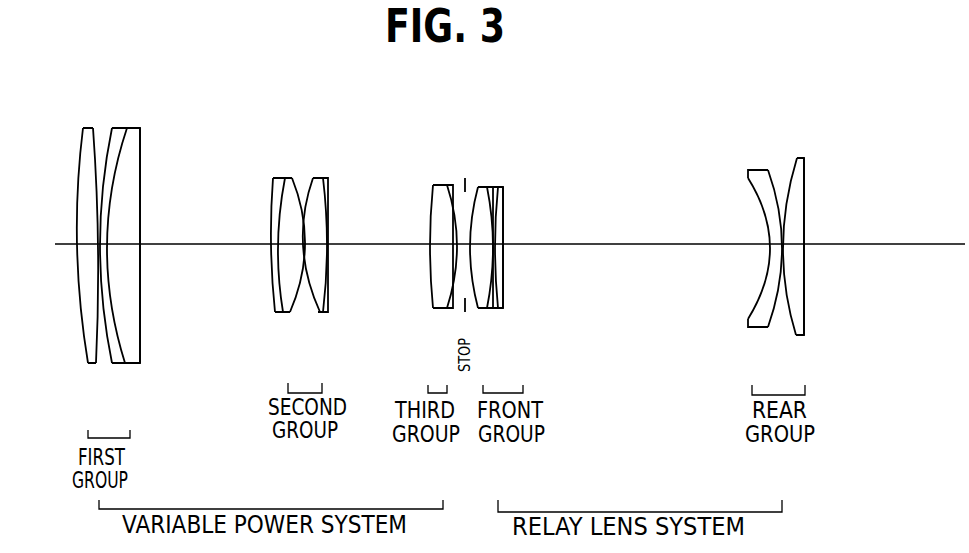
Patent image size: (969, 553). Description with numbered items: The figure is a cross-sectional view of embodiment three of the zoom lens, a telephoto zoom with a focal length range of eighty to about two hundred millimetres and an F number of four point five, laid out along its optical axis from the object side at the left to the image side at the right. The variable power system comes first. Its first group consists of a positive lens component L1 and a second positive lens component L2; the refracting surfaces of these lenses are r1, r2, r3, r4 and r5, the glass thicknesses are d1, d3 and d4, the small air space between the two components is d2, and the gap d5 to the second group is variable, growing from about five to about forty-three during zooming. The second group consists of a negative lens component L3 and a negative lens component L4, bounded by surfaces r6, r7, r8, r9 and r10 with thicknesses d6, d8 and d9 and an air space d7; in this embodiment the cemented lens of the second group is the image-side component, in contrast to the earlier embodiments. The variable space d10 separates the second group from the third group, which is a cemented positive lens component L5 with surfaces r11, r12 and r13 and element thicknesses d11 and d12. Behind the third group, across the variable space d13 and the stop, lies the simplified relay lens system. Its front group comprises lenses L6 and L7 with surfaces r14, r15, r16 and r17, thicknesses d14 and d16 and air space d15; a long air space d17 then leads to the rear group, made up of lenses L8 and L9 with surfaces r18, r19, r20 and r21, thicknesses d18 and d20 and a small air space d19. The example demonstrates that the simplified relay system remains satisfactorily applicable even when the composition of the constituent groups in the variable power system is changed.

The positive lens component L1 is at (90, 363).
The cemented positive lens component L2 is at (124, 363).
The cemented negative lens component L3 is at (282, 312).
The negative lens component L4 is at (320, 312).
The cemented positive lens component L5 is at (440, 308).
The front group lens component L6 is at (485, 308).
The front group lens component L7 is at (498, 308).
The rear group lens component L8 is at (752, 327).
The rear group lens component L9 is at (800, 335).
The refracting surface radius of curvature r1 is at (83, 128).
The refracting surface radius of curvature r2 is at (93, 128).
The refracting surface radius of curvature r3 is at (112, 128).
The refracting surface radius of curvature r4 is at (127, 128).
The refracting surface radius of curvature r5 is at (140, 128).
The refracting surface radius of curvature r6 is at (273, 178).
The refracting surface radius of curvature r7 is at (285, 178).
The refracting surface radius of curvature r8 is at (292, 178).
The refracting surface radius of curvature r9 is at (313, 178).
The refracting surface radius of curvature r10 is at (323, 178).
The refracting surface radius of curvature r11 is at (433, 185).
The refracting surface radius of curvature r12 is at (447, 185).
The refracting surface radius of curvature r13 is at (478, 187).
The refracting surface radius of curvature r14 is at (487, 187).
The refracting surface radius of curvature r15 is at (493, 187).
The refracting surface radius of curvature r16 is at (498, 187).
The refracting surface radius of curvature r17 is at (503, 187).
The refracting surface radius of curvature r18 is at (748, 170).
The refracting surface radius of curvature r19 is at (768, 170).
The refracting surface radius of curvature r20 is at (797, 158).
The refracting surface radius of curvature r21 is at (804, 158).
The axial lens thickness d1 is at (90, 234).
The axial air space d2 is at (100, 222).
The axial lens thickness d3 is at (105, 222).
The axial lens thickness d4 is at (122, 234).
The variable axial air space d5 is at (221, 249).
The axial lens thickness d6 is at (272, 226).
The axial air space d7 is at (292, 238).
The axial lens thickness d8 is at (308, 238).
The axial lens thickness d9 is at (321, 250).
The variable axial air space d10 is at (394, 249).
The axial lens thickness d11 is at (446, 236).
The axial lens thickness d12 is at (457, 248).
The variable axial air space d13 is at (460, 234).
The axial lens thickness d14 is at (483, 236).
The axial air space d15 is at (493, 238).
The axial lens thickness d16 is at (499, 247).
The axial air space d17 is at (640, 249).
The axial lens thickness d18 is at (771, 242).
The axial air space d19 is at (776, 255).
The axial lens thickness d20 is at (797, 243).